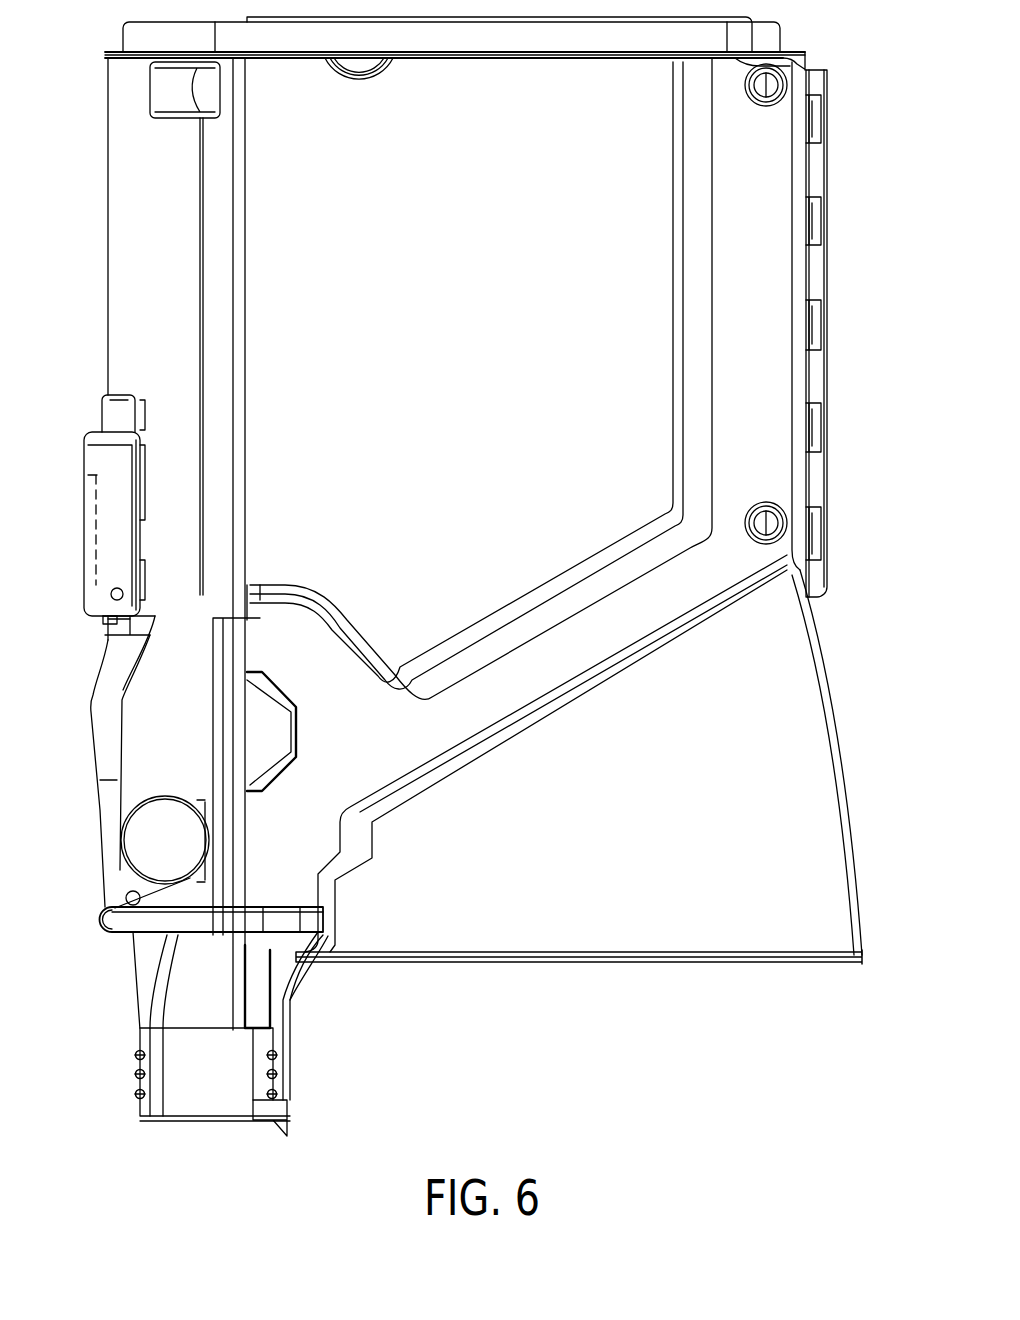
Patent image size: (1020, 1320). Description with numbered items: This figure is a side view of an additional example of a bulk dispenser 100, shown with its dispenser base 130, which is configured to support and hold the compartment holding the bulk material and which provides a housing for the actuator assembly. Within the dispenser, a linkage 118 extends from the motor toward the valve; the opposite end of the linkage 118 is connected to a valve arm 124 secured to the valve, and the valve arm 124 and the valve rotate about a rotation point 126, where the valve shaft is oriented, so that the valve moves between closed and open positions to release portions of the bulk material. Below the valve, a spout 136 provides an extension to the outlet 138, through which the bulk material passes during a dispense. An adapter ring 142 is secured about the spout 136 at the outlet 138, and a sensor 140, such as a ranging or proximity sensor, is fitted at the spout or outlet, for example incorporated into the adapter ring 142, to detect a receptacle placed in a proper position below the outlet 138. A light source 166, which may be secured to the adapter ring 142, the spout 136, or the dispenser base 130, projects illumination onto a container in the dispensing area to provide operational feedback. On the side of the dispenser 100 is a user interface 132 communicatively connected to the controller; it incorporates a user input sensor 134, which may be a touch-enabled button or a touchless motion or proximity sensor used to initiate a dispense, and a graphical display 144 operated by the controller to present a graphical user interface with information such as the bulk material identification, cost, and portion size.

The dispenser 100 is at (846, 97).
The linkage 118 is at (275, 915).
The valve arm 124 is at (116, 897).
The rotation point 126 is at (157, 815).
The dispenser base 130 is at (810, 765).
The user interface 132 is at (86, 456).
The user input sensor 134 is at (86, 598).
The spout 136 is at (162, 1015).
The outlet 138 is at (206, 1128).
The sensor 140 is at (290, 1128).
The adapter ring 142 is at (162, 1093).
The graphical display 144 is at (95, 524).
The light source 166 is at (265, 1110).